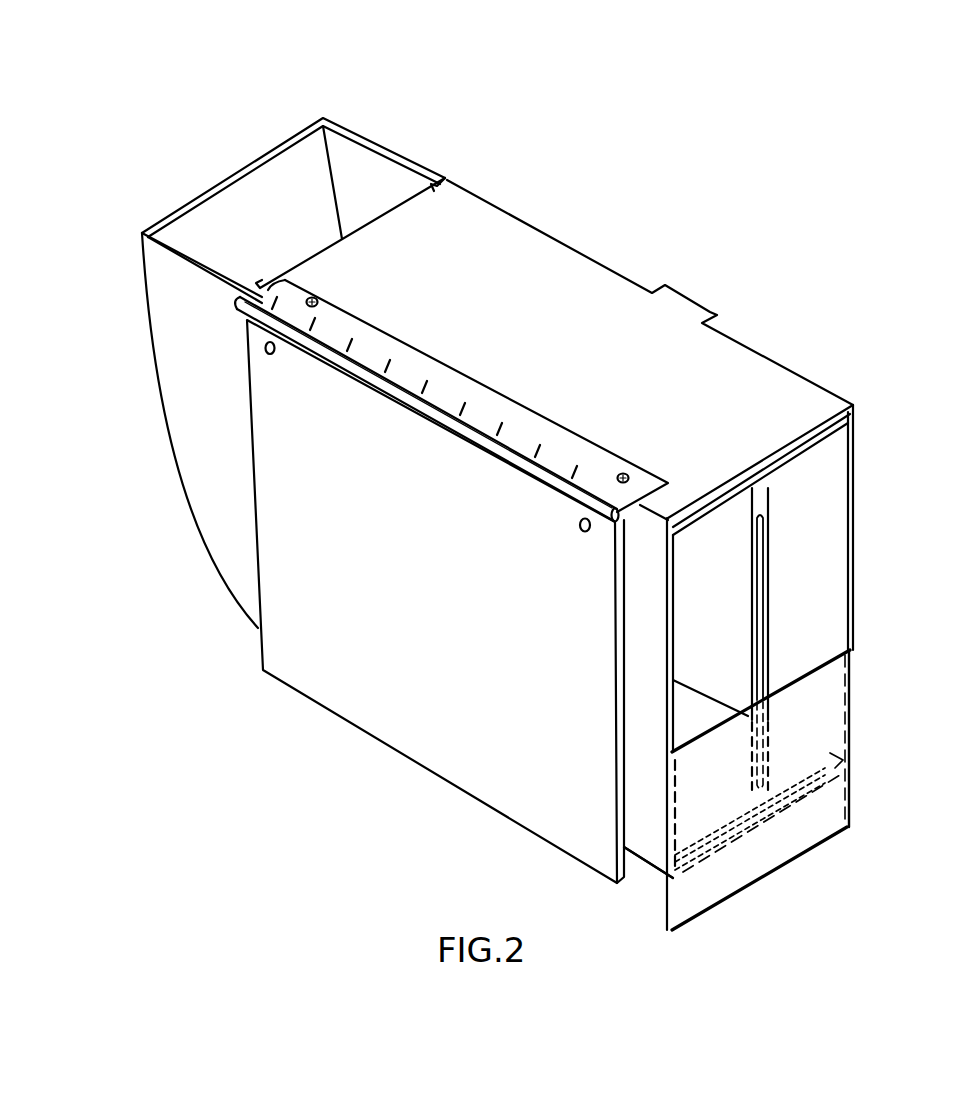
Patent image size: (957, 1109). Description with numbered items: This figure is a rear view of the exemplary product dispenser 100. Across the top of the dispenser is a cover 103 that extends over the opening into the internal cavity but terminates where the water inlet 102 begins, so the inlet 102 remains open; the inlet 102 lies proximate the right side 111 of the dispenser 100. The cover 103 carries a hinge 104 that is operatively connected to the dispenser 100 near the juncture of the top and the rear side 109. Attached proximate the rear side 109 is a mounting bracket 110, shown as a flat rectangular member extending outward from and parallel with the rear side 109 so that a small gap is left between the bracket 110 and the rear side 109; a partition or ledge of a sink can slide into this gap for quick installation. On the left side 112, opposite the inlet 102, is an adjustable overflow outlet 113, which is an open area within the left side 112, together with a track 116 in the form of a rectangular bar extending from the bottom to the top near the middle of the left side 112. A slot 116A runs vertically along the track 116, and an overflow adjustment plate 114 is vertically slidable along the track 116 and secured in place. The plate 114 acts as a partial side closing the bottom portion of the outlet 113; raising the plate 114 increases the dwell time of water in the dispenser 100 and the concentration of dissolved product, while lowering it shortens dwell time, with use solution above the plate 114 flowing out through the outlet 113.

The product dispenser 100 is at (733, 246).
The water inlet 102 is at (248, 169).
The cover 103 is at (728, 363).
The hinge 104 is at (417, 403).
The rear side 109 is at (652, 727).
The mounting bracket 110 is at (387, 694).
The right side 111 is at (297, 133).
The left side 112 is at (827, 773).
The adjustable overflow outlet 113 is at (838, 583).
The overflow adjustment plate 114 is at (802, 855).
The track 116 is at (768, 573).
The slot 116A is at (757, 638).